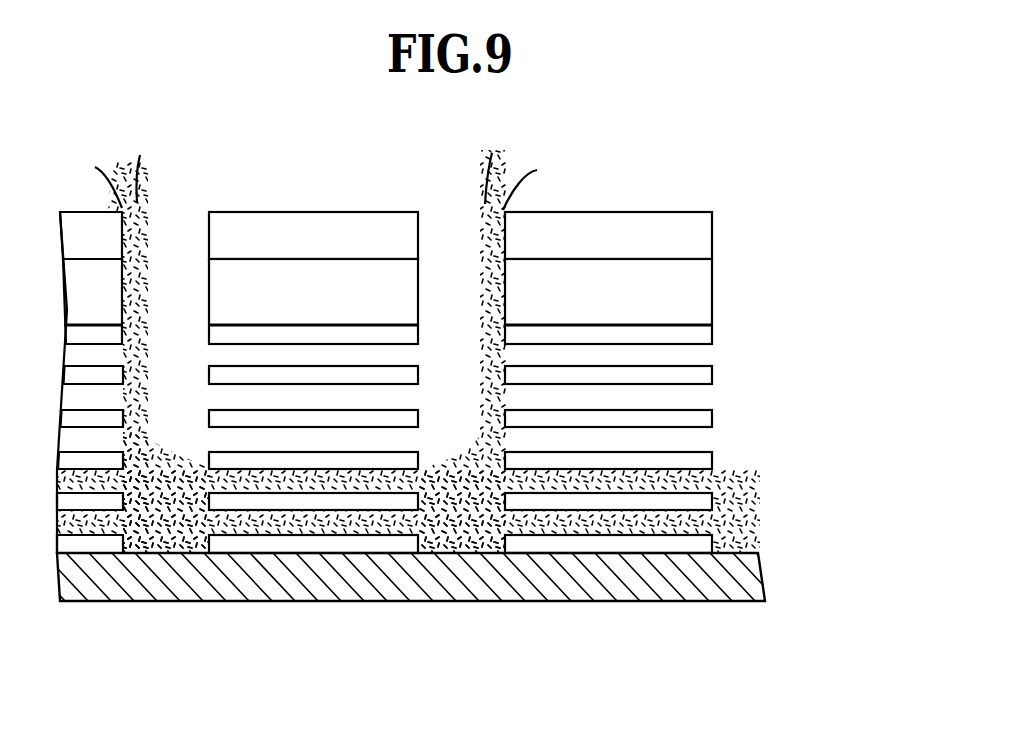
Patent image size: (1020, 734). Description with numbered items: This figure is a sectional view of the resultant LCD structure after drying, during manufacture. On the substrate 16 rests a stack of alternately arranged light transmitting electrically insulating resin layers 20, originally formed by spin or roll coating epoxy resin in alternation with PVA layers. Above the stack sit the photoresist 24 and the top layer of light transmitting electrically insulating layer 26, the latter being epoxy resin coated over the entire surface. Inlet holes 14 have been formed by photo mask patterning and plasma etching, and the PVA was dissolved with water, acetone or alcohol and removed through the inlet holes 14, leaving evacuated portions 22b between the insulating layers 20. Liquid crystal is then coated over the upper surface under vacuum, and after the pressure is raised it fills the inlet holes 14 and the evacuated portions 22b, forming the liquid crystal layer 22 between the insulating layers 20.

The inlet hole 14 is at (173, 256).
The substrate 16 is at (712, 593).
The light transmitting electrically insulating resin layer 20 is at (702, 420).
The liquid crystal layer 22 is at (712, 510).
The evacuated portion 22b is at (702, 397).
The photoresist 24 is at (342, 287).
The top layer of light transmitting electrically insulating layer 26 is at (288, 228).